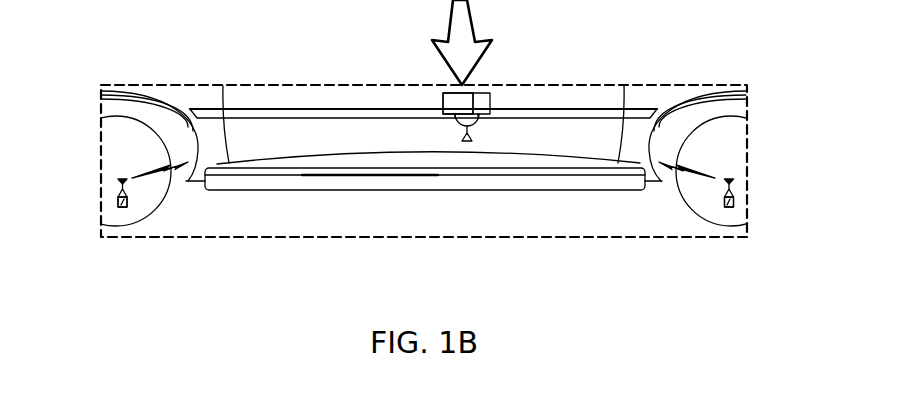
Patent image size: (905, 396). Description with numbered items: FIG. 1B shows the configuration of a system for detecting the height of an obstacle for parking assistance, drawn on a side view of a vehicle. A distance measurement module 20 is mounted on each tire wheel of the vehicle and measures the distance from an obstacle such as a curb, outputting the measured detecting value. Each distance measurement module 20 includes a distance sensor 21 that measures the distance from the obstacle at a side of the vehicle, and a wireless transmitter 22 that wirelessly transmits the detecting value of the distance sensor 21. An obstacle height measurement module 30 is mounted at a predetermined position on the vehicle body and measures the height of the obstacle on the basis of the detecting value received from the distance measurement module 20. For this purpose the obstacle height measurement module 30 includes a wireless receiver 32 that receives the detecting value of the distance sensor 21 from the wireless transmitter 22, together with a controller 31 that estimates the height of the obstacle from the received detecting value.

The distance measurement module 20 is at (100, 203).
The distance sensor 21 is at (125, 208).
The wireless transmitter 22 is at (131, 185).
The obstacle height measurement module 30 is at (484, 84).
The receiver module 31 is at (452, 98).
The wireless receiver 32 is at (460, 132).